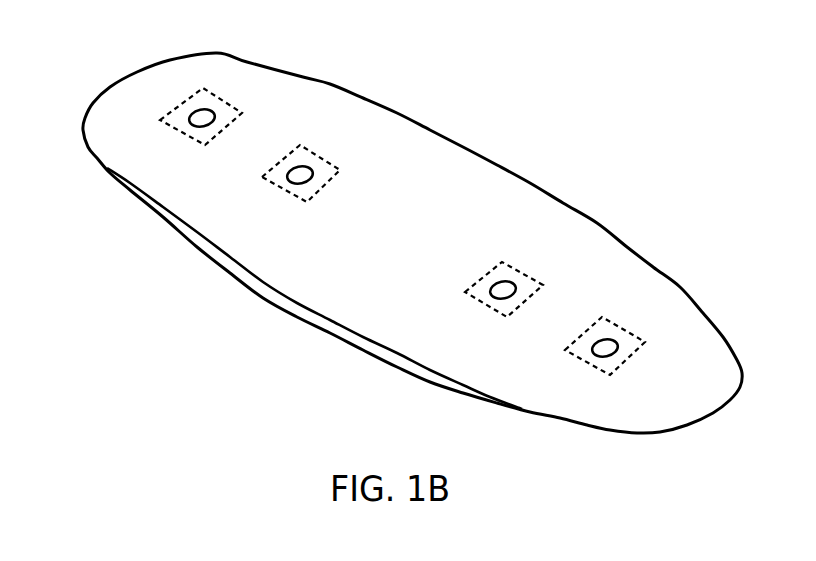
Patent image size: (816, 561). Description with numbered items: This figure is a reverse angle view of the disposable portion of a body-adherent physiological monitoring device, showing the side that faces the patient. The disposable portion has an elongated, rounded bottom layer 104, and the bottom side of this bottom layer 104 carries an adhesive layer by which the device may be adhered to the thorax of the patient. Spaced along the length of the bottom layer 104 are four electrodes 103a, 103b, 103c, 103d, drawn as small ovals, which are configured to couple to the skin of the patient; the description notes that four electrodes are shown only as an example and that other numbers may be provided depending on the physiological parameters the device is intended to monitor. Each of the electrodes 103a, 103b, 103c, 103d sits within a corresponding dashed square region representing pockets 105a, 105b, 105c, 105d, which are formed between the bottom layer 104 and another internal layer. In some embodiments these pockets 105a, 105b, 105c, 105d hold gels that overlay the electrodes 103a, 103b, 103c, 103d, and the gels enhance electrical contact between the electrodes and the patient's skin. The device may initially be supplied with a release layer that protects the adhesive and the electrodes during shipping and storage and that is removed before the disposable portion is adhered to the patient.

The bottom layer 104 is at (444, 190).
The electrode 103a is at (202, 118).
The electrode 103b is at (300, 175).
The electrode 103c is at (503, 290).
The electrode 103d is at (605, 348).
The pocket 105a is at (160, 120).
The pocket 105b is at (262, 177).
The pocket 105c is at (465, 292).
The pocket 105d is at (565, 350).